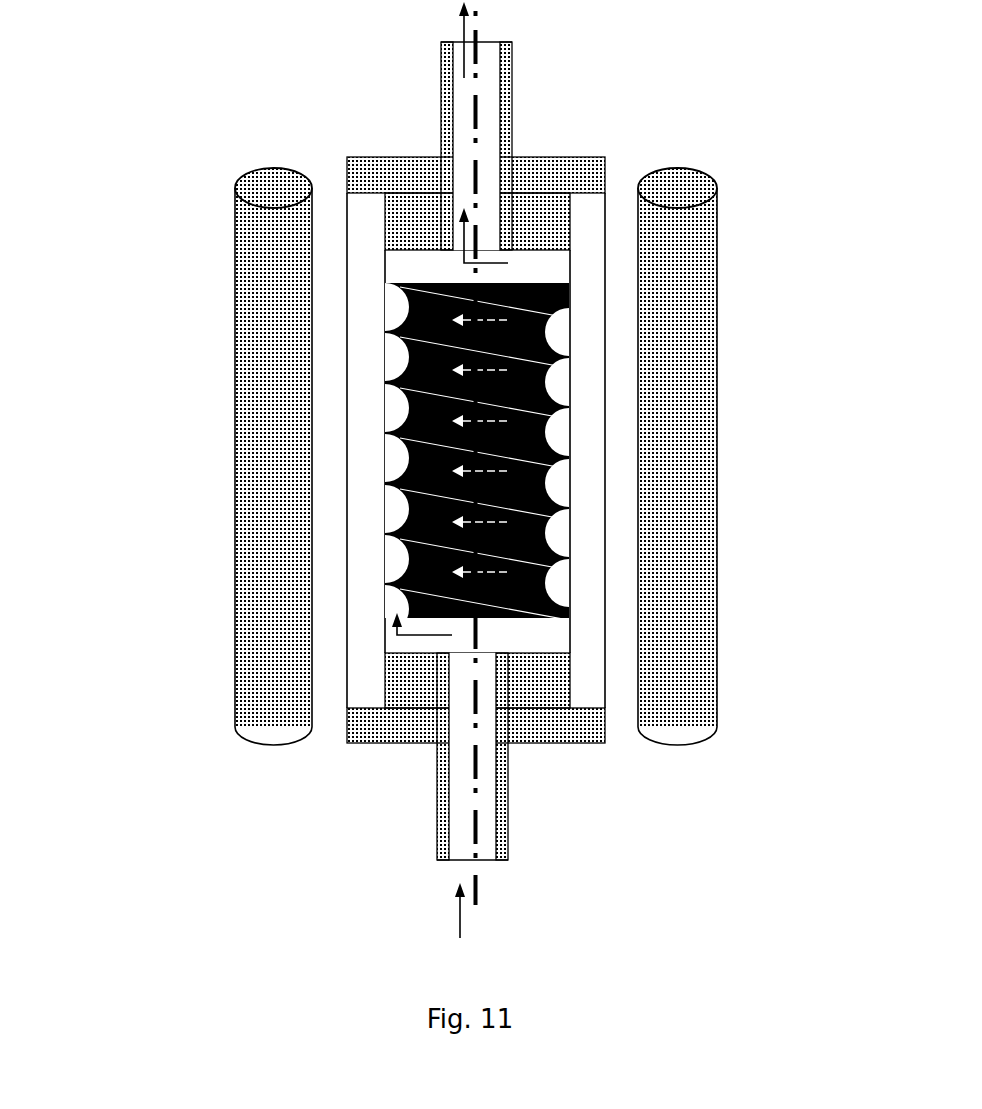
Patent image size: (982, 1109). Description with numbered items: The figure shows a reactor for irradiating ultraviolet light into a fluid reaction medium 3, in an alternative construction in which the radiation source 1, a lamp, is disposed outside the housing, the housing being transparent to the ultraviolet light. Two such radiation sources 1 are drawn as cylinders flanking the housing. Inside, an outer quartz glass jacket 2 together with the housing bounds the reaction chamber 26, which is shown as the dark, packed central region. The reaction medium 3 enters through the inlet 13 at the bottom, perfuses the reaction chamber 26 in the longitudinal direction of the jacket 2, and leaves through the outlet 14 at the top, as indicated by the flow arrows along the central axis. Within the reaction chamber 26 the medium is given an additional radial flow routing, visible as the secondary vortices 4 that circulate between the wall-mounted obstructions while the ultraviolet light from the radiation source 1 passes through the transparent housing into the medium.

The radiation source 1 is at (437, 680).
The outer quartz glass jacket 2 is at (373, 353).
The fluid reaction medium 3 is at (477, 458).
The secondary vortices 4 is at (500, 652).
The inlet 13 is at (483, 825).
The outlet 14 is at (463, 145).
The irradiation chamber 26 is at (636, 458).